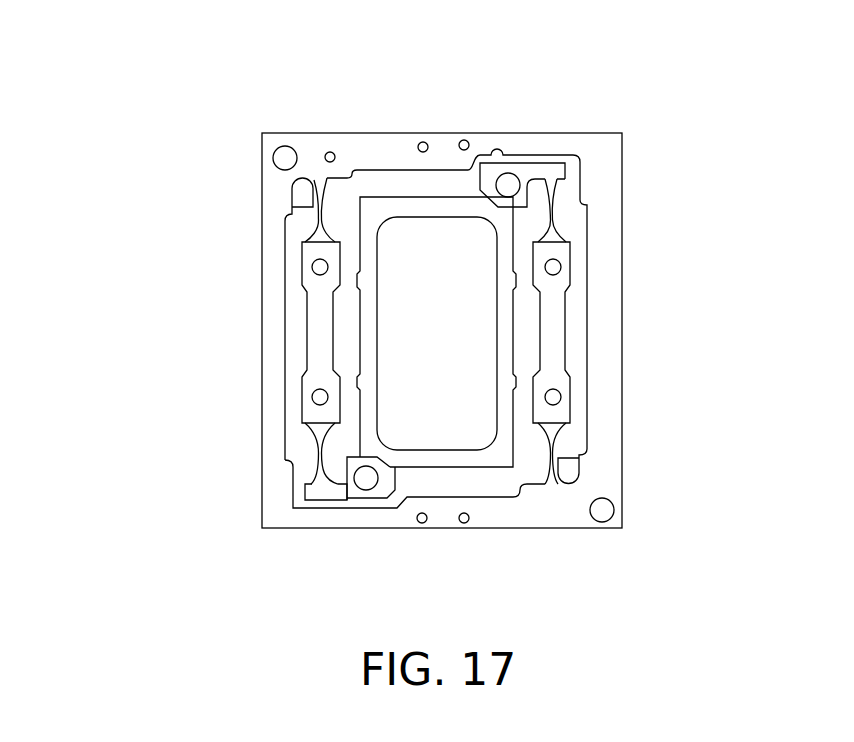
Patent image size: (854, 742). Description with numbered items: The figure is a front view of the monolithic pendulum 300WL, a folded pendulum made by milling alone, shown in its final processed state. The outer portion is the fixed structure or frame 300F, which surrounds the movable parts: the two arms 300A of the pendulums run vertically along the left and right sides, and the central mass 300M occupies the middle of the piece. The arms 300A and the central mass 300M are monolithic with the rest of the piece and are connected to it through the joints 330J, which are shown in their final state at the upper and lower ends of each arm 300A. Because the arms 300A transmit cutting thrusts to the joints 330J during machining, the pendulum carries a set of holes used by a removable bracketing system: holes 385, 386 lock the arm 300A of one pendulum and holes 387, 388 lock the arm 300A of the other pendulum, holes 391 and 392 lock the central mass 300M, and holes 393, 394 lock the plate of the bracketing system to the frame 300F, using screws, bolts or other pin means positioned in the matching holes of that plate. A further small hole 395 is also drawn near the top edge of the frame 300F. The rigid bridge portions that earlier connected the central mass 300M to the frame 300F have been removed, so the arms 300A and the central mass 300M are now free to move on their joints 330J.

The monolithic pendulum 300WL is at (208, 197).
The fixed structure or frame 300F is at (597, 168).
The central mass 300M is at (490, 457).
The arms 300A is at (318, 330).
The joints 330J is at (552, 220).
The hole 385 is at (312, 270).
The hole 386 is at (312, 398).
The hole 387 is at (563, 266).
The hole 388 is at (562, 398).
The hole 391 is at (508, 183).
The hole 392 is at (366, 480).
The hole 393 is at (612, 511).
The hole 394 is at (284, 156).
The alignment hole 395 is at (330, 152).